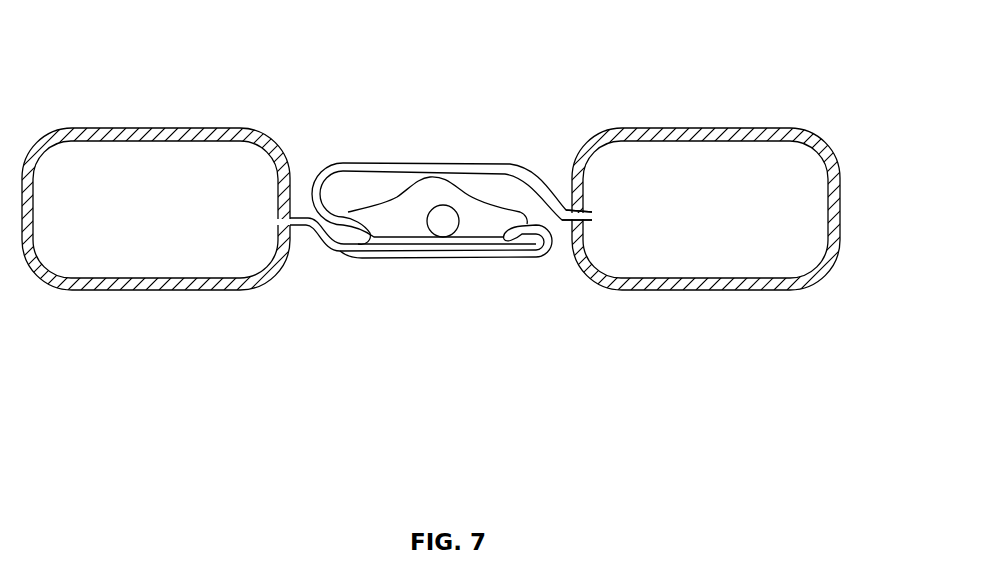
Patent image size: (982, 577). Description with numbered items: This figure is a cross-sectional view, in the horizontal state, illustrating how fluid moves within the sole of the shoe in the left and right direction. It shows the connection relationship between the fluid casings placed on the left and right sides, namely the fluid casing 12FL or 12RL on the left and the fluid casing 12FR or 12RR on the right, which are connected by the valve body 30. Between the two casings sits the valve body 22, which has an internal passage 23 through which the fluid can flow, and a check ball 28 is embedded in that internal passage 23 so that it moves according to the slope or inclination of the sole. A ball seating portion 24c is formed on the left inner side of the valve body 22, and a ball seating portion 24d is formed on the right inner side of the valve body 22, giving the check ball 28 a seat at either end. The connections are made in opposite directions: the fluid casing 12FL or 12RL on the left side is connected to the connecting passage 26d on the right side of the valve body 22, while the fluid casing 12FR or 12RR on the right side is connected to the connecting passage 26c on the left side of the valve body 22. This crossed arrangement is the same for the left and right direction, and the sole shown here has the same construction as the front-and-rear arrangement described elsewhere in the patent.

The fluid casing 12FL is at (225, 292).
The fluid casing 12RL is at (148, 290).
The fluid casing 12FR is at (696, 298).
The fluid casing 12RR is at (718, 290).
The valve body 22 is at (453, 155).
The internal passage 23 is at (437, 188).
The ball seating portion 24c is at (373, 243).
The ball seating portion 24d is at (516, 232).
The connecting passage 26c is at (347, 205).
The connecting passage 26d is at (527, 218).
The check ball 28 is at (442, 224).
The valve body 30 is at (445, 174).